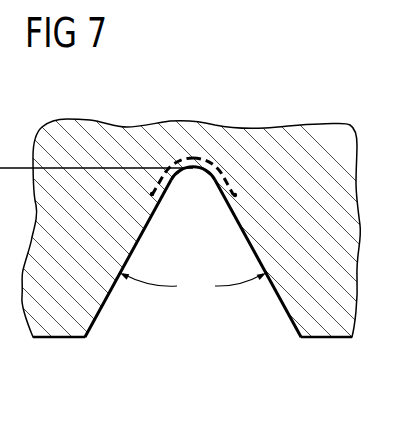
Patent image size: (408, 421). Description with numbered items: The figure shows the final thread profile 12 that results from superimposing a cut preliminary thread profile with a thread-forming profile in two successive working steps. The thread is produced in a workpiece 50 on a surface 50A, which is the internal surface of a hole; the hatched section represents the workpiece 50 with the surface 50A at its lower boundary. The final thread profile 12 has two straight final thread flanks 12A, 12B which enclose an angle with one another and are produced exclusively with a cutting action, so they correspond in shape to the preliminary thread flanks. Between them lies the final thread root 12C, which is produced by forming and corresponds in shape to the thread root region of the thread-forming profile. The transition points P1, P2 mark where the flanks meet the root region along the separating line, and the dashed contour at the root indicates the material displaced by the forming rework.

The workpiece 50 is at (66, 137).
The surface of the workpiece 50A is at (60, 338).
The final thread profile 12 is at (186, 207).
The final thread flank 12A is at (110, 288).
The final thread flank 12B is at (249, 240).
The final thread root 12C is at (193, 167).
The transition point P1 is at (150, 193).
The transition point P2 is at (238, 195).